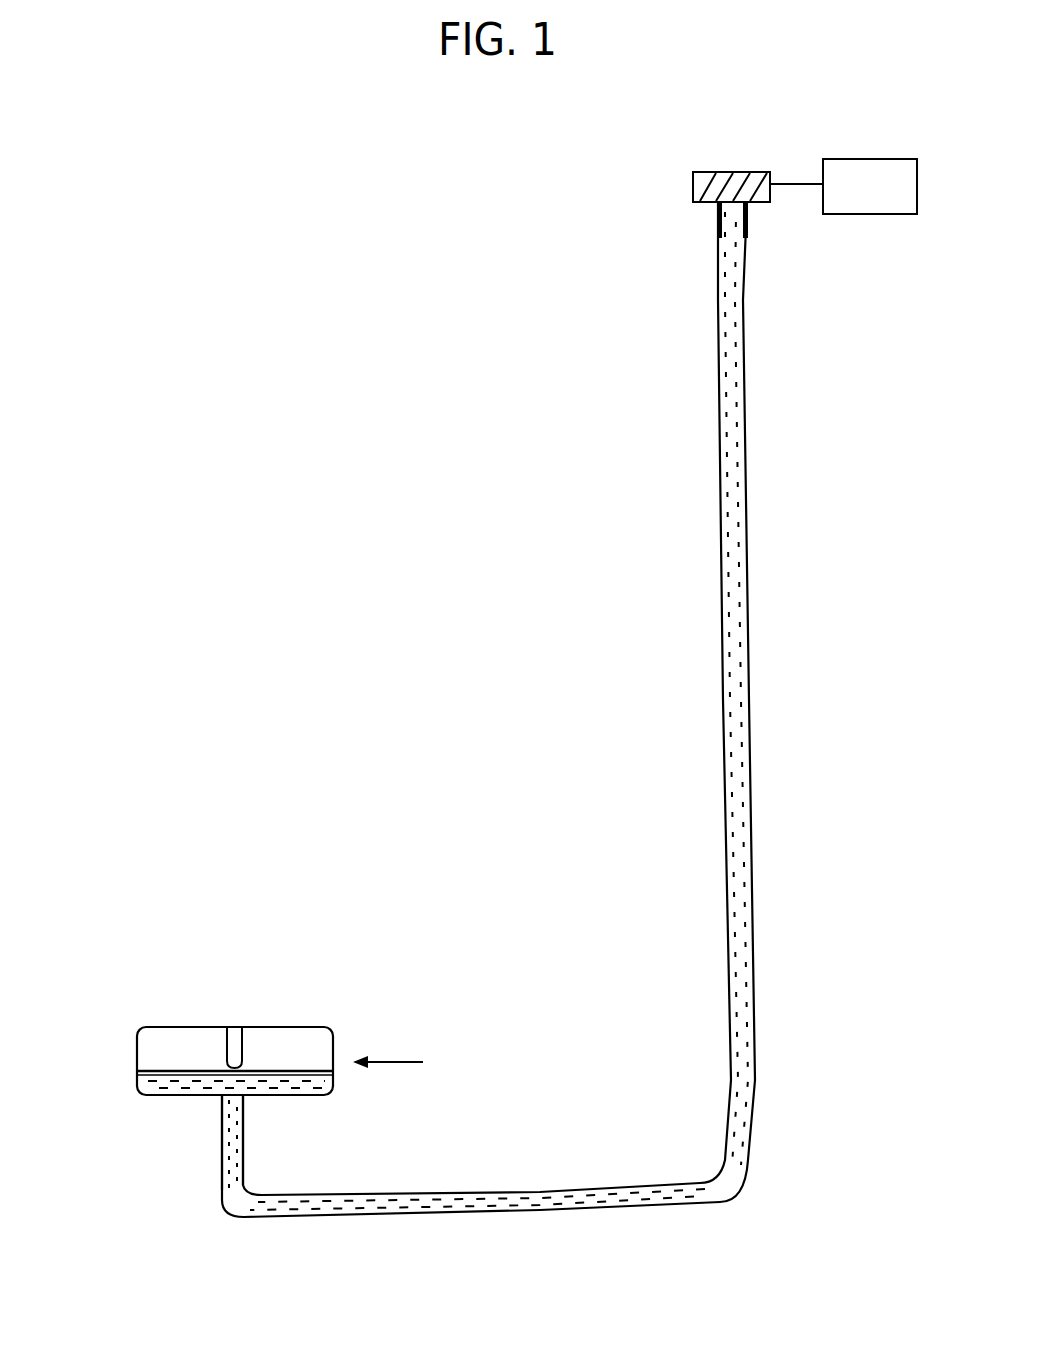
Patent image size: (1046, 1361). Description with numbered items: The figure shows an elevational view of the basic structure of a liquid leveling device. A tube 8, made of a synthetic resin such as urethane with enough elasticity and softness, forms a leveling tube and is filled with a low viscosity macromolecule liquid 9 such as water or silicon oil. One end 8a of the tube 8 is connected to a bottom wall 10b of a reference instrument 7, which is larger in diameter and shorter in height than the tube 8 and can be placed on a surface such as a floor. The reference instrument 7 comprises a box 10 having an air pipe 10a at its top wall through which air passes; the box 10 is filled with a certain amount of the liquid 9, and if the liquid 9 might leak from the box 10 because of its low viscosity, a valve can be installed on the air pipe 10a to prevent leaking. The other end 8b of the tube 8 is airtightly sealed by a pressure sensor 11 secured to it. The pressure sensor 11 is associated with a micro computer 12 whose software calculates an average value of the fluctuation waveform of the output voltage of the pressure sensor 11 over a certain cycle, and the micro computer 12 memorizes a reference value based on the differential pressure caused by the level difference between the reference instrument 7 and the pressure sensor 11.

The reference instrument 7 is at (403, 1065).
The tube 8 is at (756, 1071).
The one end of the tube 8a is at (222, 1113).
The other end of the tube 8b is at (748, 268).
The low viscosity macromolecule liquid 9 is at (748, 637).
The box 10 is at (137, 1062).
The air pipe 10a is at (245, 1050).
The bottom wall 10b is at (287, 1095).
The pressure sensor 11 is at (693, 192).
The micro computer 12 is at (875, 215).